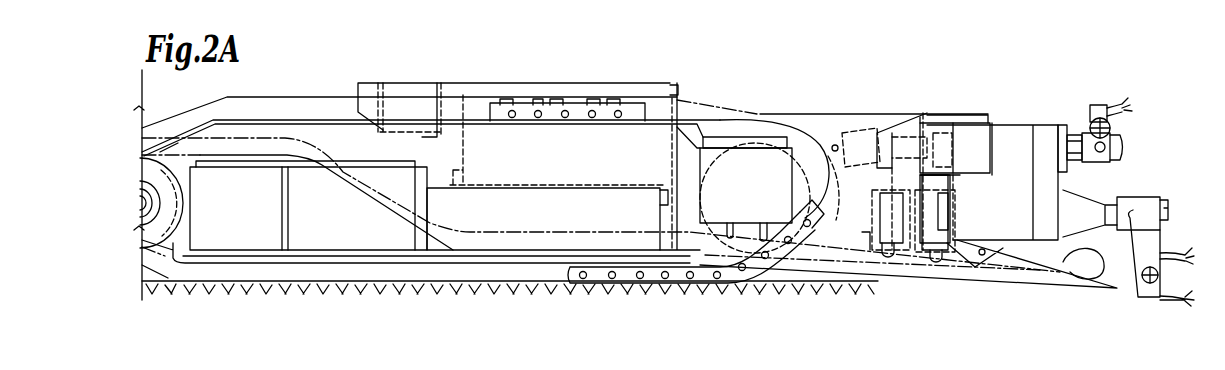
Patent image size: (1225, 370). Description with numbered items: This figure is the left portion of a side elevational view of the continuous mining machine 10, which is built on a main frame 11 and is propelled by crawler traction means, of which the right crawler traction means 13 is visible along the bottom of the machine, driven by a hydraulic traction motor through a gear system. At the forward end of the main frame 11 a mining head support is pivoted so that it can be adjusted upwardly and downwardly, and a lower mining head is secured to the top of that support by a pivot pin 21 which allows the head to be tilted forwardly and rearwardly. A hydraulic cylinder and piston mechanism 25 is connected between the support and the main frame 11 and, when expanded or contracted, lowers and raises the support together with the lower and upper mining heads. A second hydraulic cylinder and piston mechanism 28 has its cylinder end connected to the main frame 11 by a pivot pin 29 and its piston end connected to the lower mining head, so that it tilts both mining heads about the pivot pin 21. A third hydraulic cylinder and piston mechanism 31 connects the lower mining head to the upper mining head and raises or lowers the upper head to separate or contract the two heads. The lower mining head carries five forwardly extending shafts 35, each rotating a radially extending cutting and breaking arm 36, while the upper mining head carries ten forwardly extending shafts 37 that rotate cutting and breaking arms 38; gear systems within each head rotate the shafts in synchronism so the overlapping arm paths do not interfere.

The continuous mining machine 10 is at (533, 81).
The main frame 11 is at (803, 113).
The right crawler traction means 13 is at (757, 265).
The pivot pin 21 is at (983, 256).
The hydraulic cylinder and piston mechanism 25 is at (870, 248).
The hydraulic cylinder and piston mechanism 28 is at (873, 128).
The pivot pin 29 is at (826, 168).
The hydraulic cylinder and piston mechanism 31 is at (924, 260).
The forwardly extending shafts 35 is at (1119, 198).
The cutting and breaking arms 36 is at (1150, 240).
The forwardly extending shafts 37 is at (1073, 138).
The cutting and breaking arms 38 is at (1098, 110).